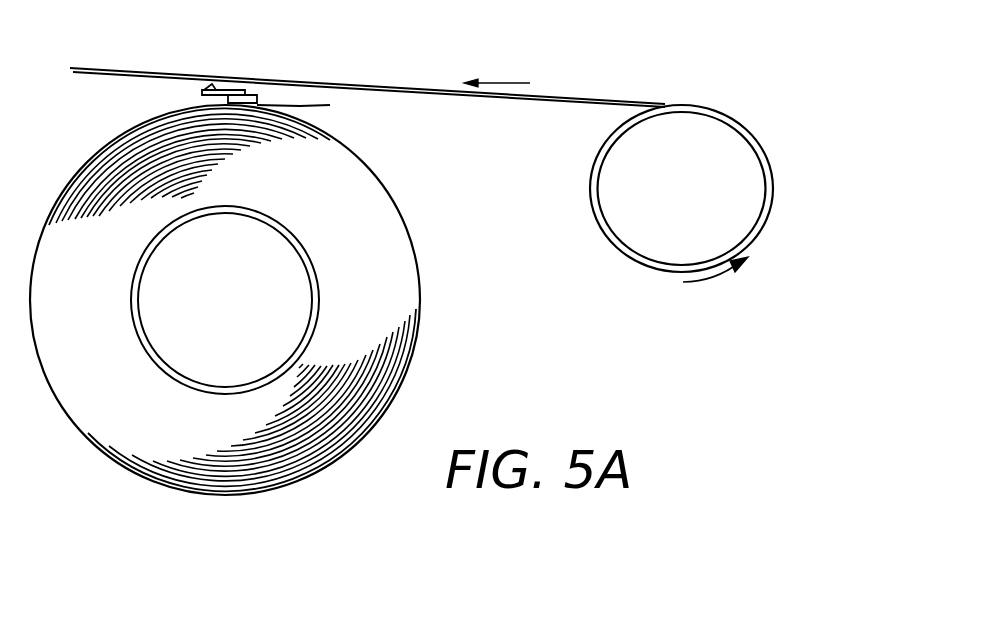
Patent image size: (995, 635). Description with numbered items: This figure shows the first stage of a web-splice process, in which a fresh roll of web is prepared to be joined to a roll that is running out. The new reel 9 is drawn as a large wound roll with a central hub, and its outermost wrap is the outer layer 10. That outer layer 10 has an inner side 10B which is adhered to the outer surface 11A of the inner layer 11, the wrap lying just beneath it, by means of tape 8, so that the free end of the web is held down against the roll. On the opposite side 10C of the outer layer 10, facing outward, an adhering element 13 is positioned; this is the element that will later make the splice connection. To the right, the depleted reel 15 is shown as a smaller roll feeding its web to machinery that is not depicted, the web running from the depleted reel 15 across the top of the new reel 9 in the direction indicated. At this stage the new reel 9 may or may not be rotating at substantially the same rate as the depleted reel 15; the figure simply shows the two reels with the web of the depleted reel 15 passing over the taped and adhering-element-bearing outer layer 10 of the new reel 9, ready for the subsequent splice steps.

The tape 8 is at (250, 100).
The new reel 9 is at (83, 437).
The outer layer 10 is at (300, 104).
The inner side 10B is at (280, 106).
The opposite side 10C is at (260, 104).
The inner layer 11 is at (112, 143).
The outer surface 11A is at (147, 117).
The adhering element 13 is at (212, 88).
The depleted reel 15 is at (590, 197).